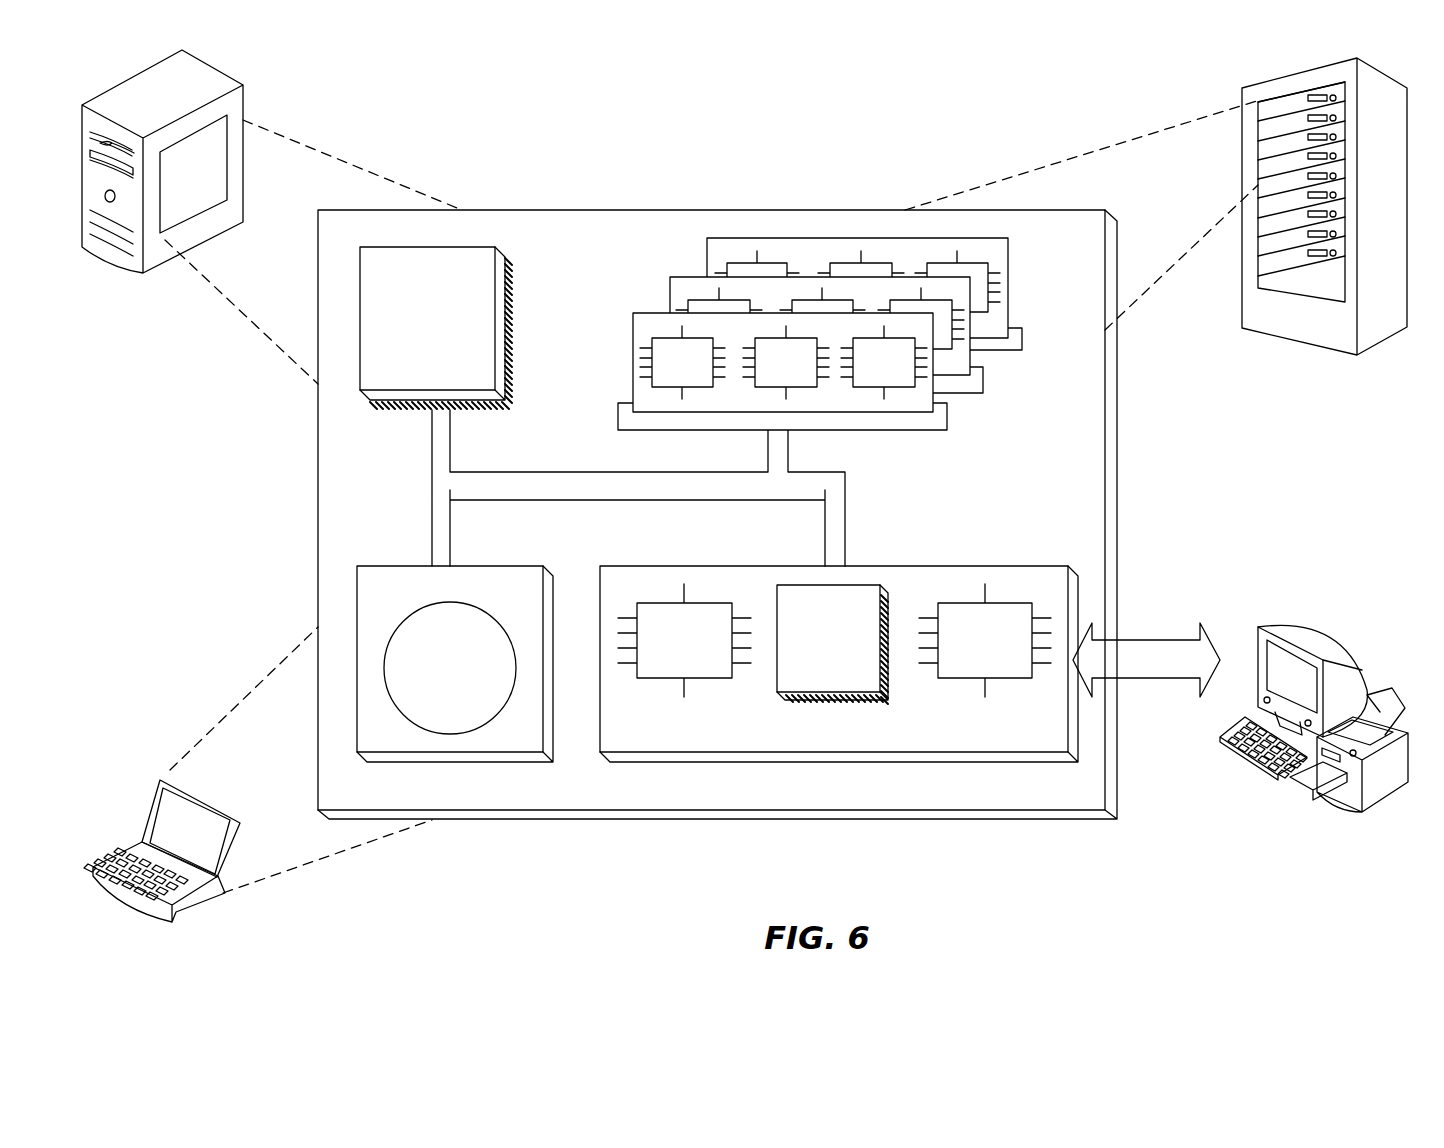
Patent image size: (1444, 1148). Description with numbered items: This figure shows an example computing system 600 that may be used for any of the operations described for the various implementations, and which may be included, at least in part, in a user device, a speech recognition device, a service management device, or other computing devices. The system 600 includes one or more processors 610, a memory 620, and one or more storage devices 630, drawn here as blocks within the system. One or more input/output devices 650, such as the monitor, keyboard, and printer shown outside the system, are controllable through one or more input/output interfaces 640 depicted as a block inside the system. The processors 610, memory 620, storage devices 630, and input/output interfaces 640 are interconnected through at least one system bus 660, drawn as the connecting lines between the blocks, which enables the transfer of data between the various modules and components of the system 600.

The computing system 600 is at (530, 128).
The processor 610 is at (436, 328).
The memory 620 is at (1015, 389).
The storage device 630 is at (455, 664).
The I/O interface 640 is at (839, 664).
The input/output device 650 is at (1258, 631).
The system bus 660 is at (632, 490).